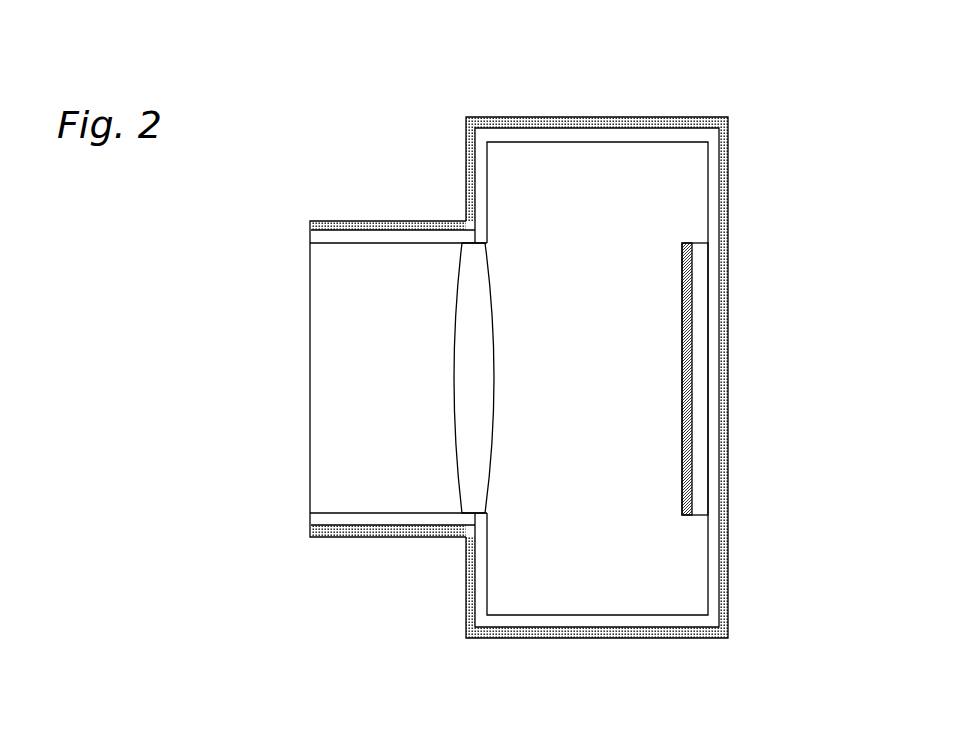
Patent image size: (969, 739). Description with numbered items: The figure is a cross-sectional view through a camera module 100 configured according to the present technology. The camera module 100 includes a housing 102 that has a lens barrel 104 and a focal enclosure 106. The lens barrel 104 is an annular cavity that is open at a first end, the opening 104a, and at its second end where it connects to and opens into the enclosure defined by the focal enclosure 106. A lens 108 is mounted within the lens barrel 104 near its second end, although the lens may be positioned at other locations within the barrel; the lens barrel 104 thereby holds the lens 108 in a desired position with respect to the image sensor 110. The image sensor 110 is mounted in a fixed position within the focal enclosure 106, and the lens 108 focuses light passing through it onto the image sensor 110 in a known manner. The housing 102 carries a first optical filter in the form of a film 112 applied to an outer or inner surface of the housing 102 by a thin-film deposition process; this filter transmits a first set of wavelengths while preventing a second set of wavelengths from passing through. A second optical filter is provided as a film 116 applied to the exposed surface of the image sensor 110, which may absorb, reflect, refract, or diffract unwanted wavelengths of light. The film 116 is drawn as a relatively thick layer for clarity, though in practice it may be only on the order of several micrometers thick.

The camera module 100 is at (719, 92).
The housing 102 is at (521, 358).
The lens barrel 104 is at (382, 237).
The opening 104a is at (321, 359).
The focal enclosure 106 is at (586, 137).
The lens 108 is at (483, 290).
The image sensor 110 is at (660, 379).
The film 112 is at (670, 125).
The film 116 is at (683, 395).